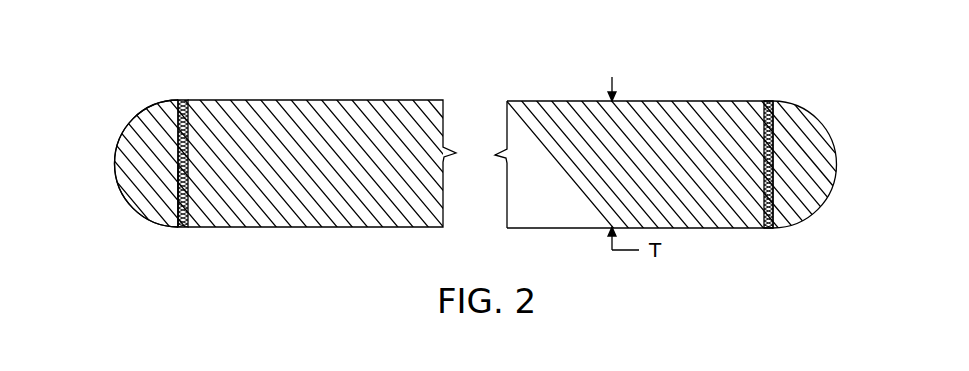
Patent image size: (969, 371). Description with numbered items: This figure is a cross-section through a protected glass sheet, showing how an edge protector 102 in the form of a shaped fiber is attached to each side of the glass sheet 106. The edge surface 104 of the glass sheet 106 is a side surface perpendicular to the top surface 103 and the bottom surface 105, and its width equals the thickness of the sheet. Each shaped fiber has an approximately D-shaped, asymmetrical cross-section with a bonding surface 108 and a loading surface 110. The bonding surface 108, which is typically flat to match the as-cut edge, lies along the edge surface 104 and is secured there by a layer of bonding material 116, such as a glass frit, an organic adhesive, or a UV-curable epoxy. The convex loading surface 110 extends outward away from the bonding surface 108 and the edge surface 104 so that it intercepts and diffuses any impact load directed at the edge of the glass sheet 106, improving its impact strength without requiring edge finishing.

The edge protector 102 is at (137, 113).
The top surface of glass sheet 103 is at (662, 101).
The edge surface of glass sheet 104 is at (178, 147).
The bottom surface of glass sheet 105 is at (690, 228).
The glass sheet 106 is at (382, 100).
The bonding surface of the protecting fiber 108 is at (180, 198).
The loading surface 110 is at (118, 183).
The bonding material 116 is at (182, 100).